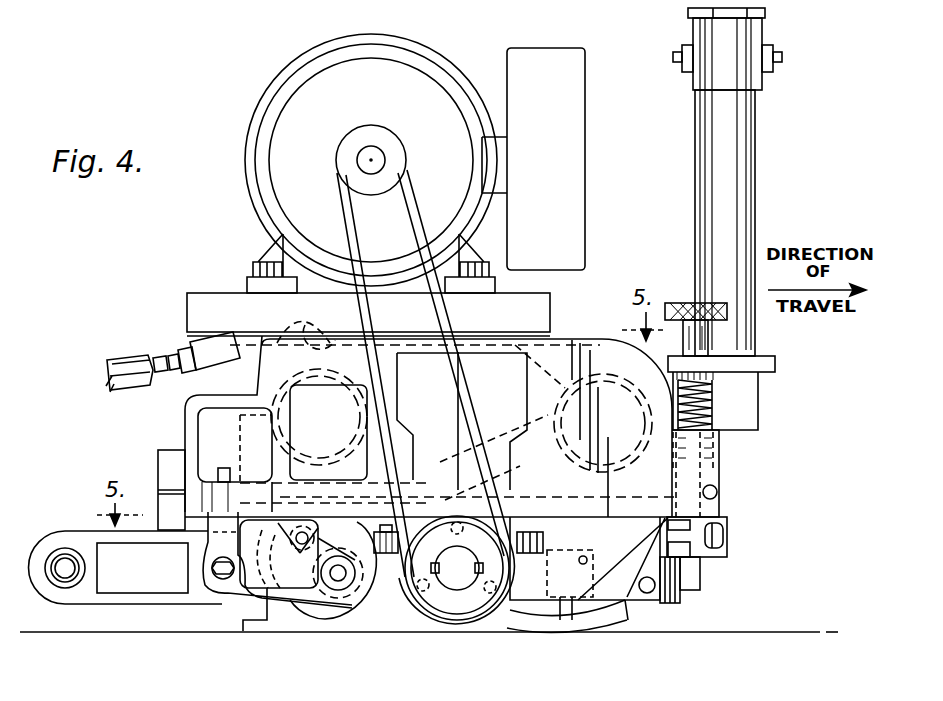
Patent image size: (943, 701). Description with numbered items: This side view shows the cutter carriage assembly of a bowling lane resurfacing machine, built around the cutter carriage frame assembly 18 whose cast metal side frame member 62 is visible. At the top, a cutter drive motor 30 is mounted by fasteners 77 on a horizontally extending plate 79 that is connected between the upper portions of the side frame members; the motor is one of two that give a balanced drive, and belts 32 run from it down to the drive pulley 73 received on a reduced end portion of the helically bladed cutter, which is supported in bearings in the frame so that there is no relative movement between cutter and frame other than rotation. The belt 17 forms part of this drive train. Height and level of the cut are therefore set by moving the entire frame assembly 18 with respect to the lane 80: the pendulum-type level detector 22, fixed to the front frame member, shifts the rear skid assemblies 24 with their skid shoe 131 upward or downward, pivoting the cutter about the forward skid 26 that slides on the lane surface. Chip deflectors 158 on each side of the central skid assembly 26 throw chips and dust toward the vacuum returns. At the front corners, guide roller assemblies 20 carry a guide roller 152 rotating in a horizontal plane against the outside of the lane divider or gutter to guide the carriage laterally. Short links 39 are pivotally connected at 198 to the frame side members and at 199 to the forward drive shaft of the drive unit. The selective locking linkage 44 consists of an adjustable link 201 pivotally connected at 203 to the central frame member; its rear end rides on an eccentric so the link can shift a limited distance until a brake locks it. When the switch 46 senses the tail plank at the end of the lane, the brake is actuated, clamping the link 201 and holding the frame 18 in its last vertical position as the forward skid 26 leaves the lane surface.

The drive belt 17 is at (440, 625).
The cutter carriage frame assembly 18 is at (602, 330).
The guide roller assemblies 20 is at (728, 555).
The level detector 22 is at (790, 372).
The rear skid assemblies 24 is at (315, 624).
The forward skid 26 is at (632, 598).
The cutter drive motor 30 is at (290, 157).
The belts 32 is at (420, 212).
The short links 39 is at (76, 531).
The selective locking linkage 44 is at (118, 356).
The switch 46 is at (548, 620).
The side frame member 62 is at (653, 478).
The drive pulley 73 is at (464, 605).
The fasteners 77 is at (262, 268).
The horizontally extending plate 79 is at (540, 304).
The lane 80 is at (768, 632).
The skid shoe 131 is at (285, 632).
The guide roller 152 is at (670, 600).
The chip deflectors 158 is at (598, 628).
The pivotal connection 198 is at (228, 580).
The pivotal connection 199 is at (68, 580).
The adjustable link 201 is at (128, 384).
The pivotal connection 203 is at (275, 310).